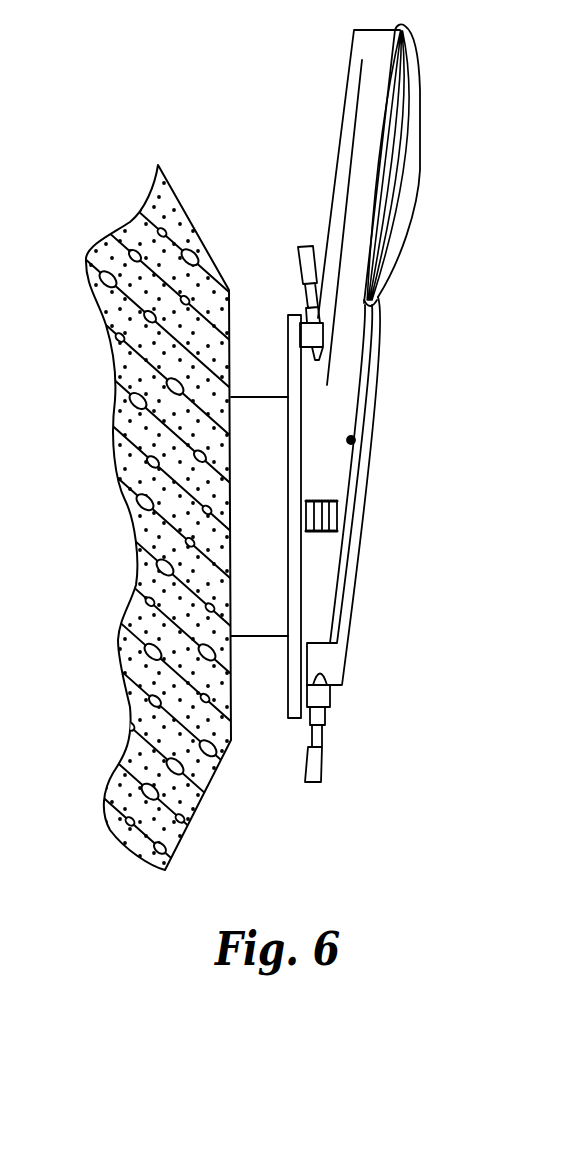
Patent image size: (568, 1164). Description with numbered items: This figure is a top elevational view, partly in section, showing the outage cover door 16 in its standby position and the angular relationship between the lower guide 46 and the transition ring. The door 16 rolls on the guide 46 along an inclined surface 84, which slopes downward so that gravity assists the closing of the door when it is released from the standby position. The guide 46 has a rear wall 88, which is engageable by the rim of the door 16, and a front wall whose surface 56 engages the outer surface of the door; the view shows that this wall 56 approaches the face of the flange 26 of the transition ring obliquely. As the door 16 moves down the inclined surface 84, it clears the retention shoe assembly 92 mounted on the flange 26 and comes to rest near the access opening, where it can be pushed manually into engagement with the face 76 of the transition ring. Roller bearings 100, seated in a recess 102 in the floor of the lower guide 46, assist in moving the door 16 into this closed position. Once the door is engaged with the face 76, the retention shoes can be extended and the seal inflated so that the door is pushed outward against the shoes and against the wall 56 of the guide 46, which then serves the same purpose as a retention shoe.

The door 16 is at (410, 170).
The flange 26 is at (305, 243).
The guide 46 is at (355, 598).
The surface of front wall of guide 56 is at (355, 436).
The face of transition ring 76 is at (303, 392).
The inclined surface 84 is at (350, 343).
The rear wall 88 is at (358, 126).
The retention shoe assembly 92 is at (312, 333).
The roller bearings 100 is at (338, 513).
The recess 102 is at (325, 499).